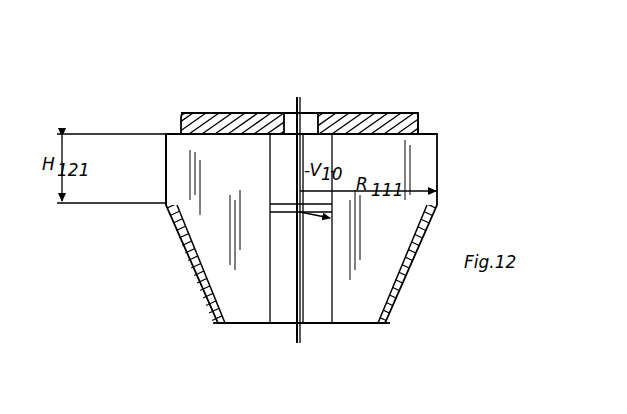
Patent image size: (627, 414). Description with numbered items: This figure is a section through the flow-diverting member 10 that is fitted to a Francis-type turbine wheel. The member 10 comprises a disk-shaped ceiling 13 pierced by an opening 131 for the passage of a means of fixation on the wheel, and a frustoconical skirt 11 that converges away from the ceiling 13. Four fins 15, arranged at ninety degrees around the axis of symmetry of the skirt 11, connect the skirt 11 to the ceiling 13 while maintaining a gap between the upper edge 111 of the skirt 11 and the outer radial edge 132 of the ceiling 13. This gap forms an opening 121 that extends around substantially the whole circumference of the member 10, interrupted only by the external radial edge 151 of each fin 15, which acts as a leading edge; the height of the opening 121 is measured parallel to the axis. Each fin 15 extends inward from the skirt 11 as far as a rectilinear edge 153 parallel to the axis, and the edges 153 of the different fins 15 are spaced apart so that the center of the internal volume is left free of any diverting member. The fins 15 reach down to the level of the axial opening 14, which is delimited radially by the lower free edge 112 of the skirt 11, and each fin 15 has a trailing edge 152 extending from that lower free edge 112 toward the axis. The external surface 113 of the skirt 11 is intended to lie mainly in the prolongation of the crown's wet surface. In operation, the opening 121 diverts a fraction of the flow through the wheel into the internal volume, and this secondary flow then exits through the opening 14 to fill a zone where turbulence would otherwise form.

The member 10 is at (469, 132).
The skirt 11 is at (178, 240).
The upper edge of the skirt 111 is at (166, 205).
The lower free edge of the skirt 112 is at (386, 326).
The external surface of the skirt 113 is at (211, 319).
The opening 121 is at (180, 170).
The ceiling 13 is at (348, 113).
The opening 131 is at (310, 120).
The outer radial edge of the ceiling 132 is at (421, 120).
The opening 14 is at (286, 325).
The fin 15 is at (222, 246).
The external radial edge of the fin 151 is at (437, 168).
The trailing edge of the fin 152 is at (238, 327).
The edge of the fin 153 is at (276, 265).